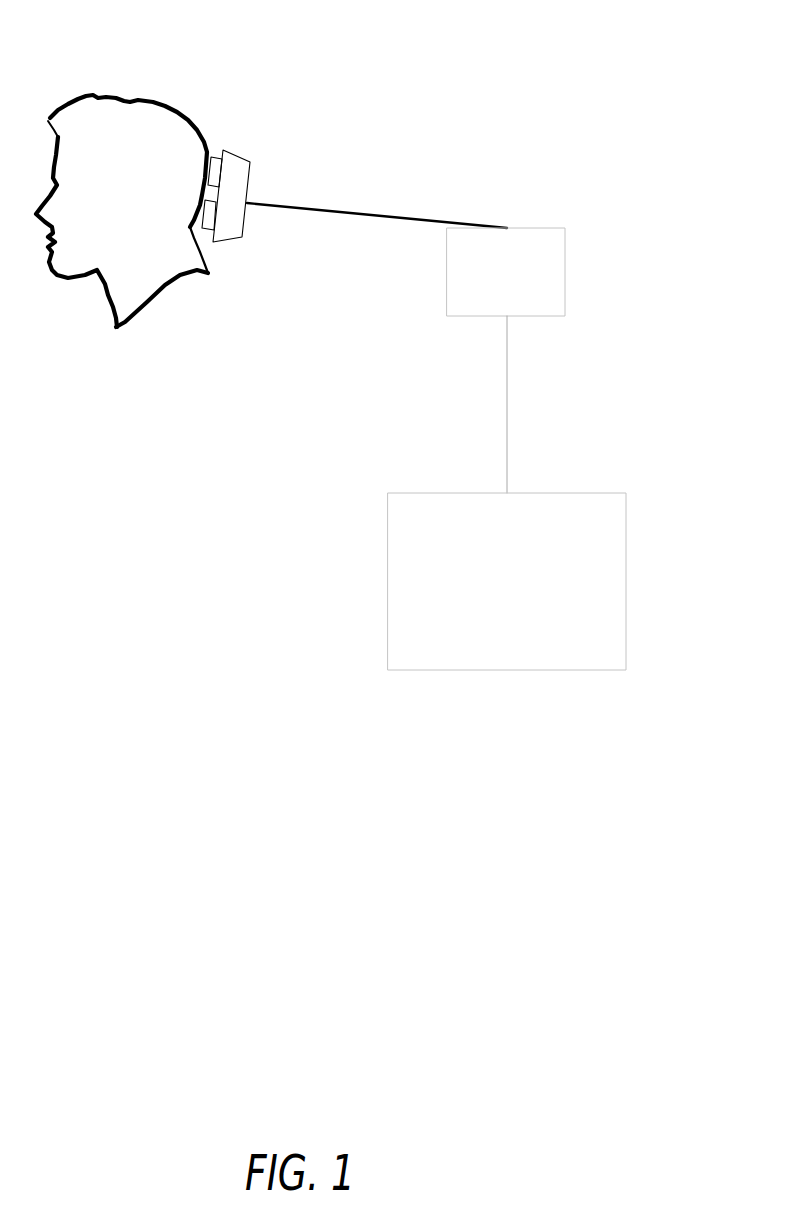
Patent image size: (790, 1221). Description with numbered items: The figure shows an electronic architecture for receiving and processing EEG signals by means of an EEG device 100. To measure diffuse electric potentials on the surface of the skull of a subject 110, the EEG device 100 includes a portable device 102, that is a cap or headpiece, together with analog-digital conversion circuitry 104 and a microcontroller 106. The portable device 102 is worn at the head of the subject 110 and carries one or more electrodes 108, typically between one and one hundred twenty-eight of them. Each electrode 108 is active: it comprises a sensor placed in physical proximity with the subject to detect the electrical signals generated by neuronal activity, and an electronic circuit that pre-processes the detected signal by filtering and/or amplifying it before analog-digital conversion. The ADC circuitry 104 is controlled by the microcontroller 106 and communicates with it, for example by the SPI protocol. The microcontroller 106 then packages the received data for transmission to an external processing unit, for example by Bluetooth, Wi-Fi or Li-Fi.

The EEG device 100 is at (238, 446).
The portable device 102 is at (250, 187).
The analog-digital conversion (ADC) circuitry 104 is at (565, 246).
The microcontroller 106 is at (626, 570).
The electrodes 108 is at (217, 158).
The subject 110 is at (172, 315).